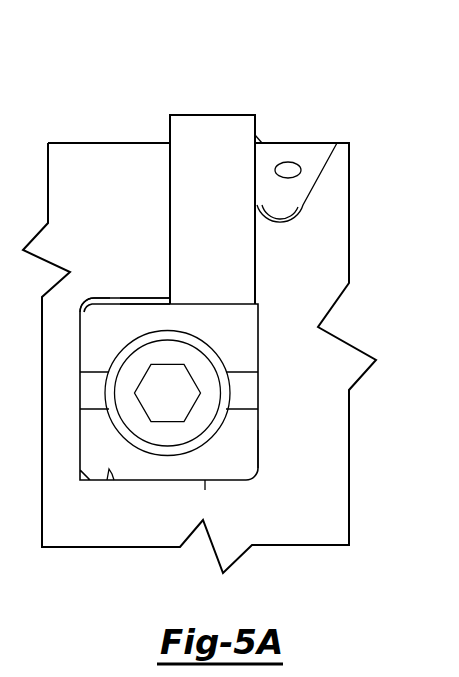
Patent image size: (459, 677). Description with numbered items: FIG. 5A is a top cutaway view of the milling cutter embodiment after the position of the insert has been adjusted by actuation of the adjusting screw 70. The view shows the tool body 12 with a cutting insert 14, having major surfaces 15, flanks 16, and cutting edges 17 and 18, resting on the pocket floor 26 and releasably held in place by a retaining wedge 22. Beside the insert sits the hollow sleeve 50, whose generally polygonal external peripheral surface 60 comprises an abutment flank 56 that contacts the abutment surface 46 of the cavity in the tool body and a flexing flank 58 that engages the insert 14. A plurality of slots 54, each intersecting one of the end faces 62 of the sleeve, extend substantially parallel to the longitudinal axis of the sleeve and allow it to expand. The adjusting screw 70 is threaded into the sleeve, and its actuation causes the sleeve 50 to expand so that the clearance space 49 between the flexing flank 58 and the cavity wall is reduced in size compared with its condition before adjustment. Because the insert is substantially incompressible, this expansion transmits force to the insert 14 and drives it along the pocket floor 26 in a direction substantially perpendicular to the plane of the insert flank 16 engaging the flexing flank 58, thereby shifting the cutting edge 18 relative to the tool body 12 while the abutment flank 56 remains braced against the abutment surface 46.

The tool body 12 is at (90, 143).
The cutting insert 14 is at (223, 115).
The major surfaces 15 is at (168, 128).
The flanks 16 is at (221, 221).
The cutting edge 17 is at (258, 136).
The cutting edge 18 is at (258, 132).
The retaining wedge 22 is at (284, 206).
The pocket floor 26 is at (172, 197).
The abutment surface 46 is at (110, 482).
The clearance space 49 is at (110, 298).
The sleeve 50 is at (258, 345).
The slots 54 is at (92, 395).
The abutment flank 56 is at (208, 481).
The flexing flank 58 is at (138, 304).
The external peripheral surface 60 is at (258, 447).
The end faces 62 is at (121, 340).
The adjusting screw 70 is at (181, 404).